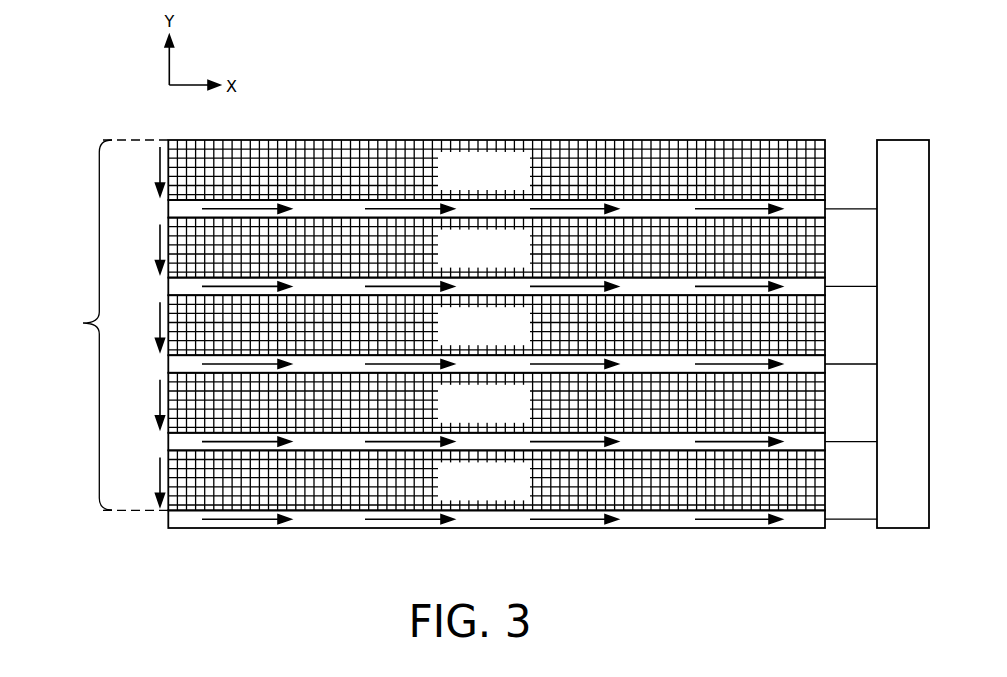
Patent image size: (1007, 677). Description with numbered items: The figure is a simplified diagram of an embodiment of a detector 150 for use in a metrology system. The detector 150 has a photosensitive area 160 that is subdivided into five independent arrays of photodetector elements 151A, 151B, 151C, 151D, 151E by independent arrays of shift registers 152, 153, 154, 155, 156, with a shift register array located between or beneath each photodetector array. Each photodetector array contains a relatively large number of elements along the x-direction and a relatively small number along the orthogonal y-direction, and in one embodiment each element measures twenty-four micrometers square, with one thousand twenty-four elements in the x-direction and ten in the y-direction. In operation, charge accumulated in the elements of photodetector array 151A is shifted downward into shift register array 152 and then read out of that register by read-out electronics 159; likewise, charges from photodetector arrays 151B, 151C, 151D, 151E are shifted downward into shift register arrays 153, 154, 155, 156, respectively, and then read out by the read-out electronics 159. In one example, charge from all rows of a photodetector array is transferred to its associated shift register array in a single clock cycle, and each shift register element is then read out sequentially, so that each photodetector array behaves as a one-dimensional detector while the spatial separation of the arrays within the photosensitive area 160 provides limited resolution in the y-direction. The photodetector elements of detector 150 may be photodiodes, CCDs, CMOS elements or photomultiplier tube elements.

The detector 150 is at (876, 92).
The photodetector array 151A is at (496, 170).
The photodetector array 151B is at (496, 248).
The photodetector array 151C is at (496, 325).
The photodetector array 151D is at (496, 403).
The photodetector array 151E is at (496, 480).
The shift register array 152 is at (168, 207).
The shift register array 153 is at (168, 285).
The shift register array 154 is at (168, 363).
The shift register array 155 is at (168, 440).
The shift register array 156 is at (168, 518).
The read-out electronics 159 is at (889, 302).
The photosensitive area 160 is at (83, 323).